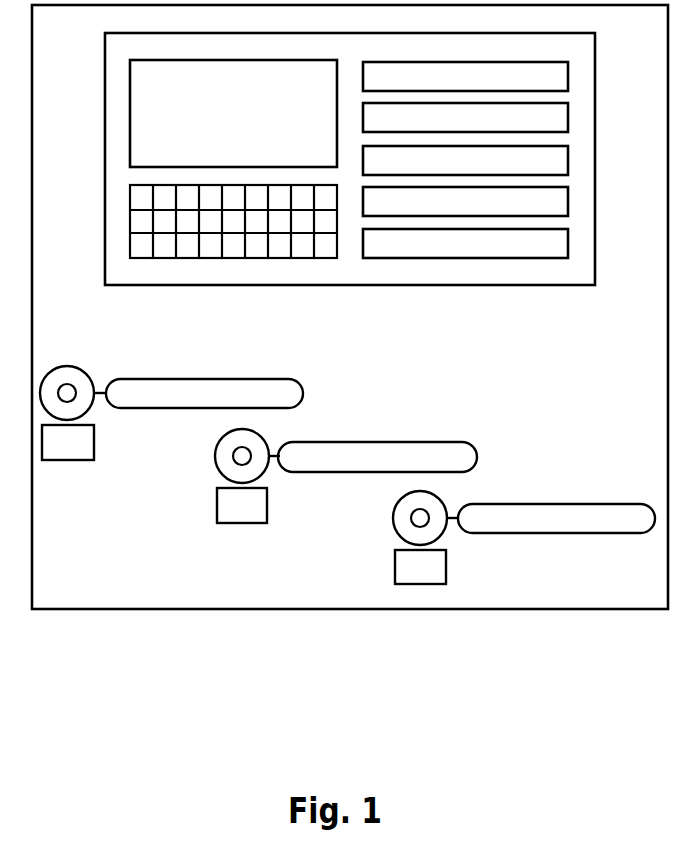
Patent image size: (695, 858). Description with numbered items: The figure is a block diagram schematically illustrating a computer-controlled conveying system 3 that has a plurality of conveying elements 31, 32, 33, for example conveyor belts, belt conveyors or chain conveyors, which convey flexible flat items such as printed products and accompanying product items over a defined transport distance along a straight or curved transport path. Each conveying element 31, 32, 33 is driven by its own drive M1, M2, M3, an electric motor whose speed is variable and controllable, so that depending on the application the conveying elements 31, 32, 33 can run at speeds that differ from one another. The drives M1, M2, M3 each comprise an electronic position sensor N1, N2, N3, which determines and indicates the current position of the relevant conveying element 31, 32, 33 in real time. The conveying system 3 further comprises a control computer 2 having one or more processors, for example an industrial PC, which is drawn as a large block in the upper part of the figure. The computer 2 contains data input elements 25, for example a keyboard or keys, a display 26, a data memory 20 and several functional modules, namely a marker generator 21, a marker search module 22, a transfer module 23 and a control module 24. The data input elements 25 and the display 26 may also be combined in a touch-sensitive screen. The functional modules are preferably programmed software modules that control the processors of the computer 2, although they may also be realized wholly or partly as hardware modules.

The computer 2 is at (122, 267).
The conveying system 3 is at (54, 600).
The data memory 20 is at (558, 243).
The marker generator 21 is at (558, 201).
The marker search module 22 is at (558, 159).
The transfer module 23 is at (558, 117).
The control module 24 is at (558, 75).
The data input elements 25 is at (127, 223).
The display 26 is at (140, 131).
The conveying element 31 is at (299, 385).
The conveying element 32 is at (472, 452).
The conveying element 33 is at (624, 527).
The drive M1 is at (75, 376).
The drive M2 is at (222, 462).
The drive M3 is at (400, 524).
The electronic position sensor N1 is at (68, 447).
The electronic position sensor N2 is at (222, 504).
The electronic position sensor N3 is at (398, 563).